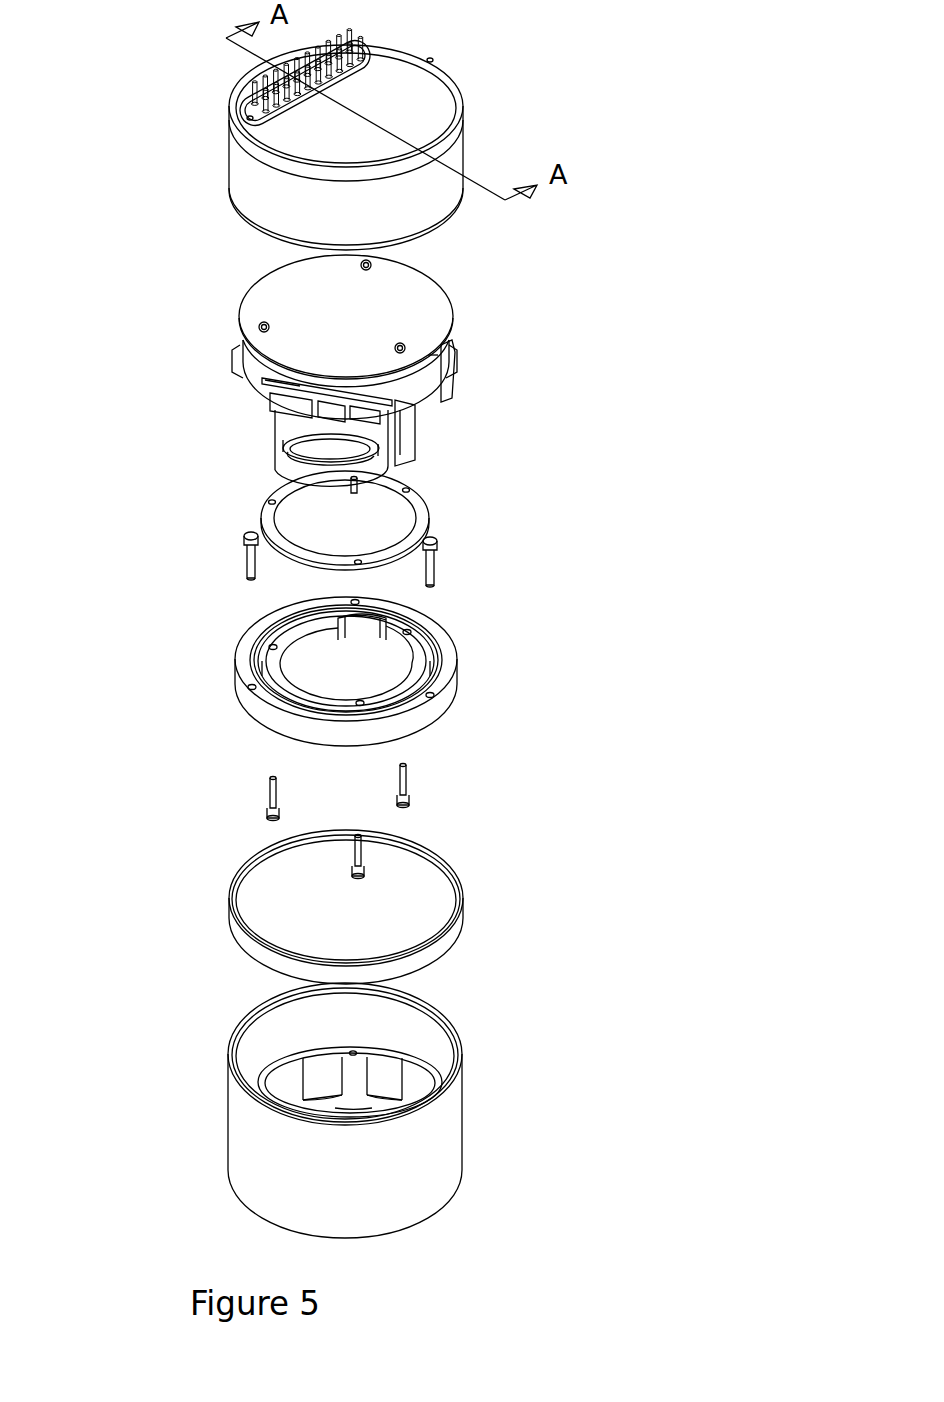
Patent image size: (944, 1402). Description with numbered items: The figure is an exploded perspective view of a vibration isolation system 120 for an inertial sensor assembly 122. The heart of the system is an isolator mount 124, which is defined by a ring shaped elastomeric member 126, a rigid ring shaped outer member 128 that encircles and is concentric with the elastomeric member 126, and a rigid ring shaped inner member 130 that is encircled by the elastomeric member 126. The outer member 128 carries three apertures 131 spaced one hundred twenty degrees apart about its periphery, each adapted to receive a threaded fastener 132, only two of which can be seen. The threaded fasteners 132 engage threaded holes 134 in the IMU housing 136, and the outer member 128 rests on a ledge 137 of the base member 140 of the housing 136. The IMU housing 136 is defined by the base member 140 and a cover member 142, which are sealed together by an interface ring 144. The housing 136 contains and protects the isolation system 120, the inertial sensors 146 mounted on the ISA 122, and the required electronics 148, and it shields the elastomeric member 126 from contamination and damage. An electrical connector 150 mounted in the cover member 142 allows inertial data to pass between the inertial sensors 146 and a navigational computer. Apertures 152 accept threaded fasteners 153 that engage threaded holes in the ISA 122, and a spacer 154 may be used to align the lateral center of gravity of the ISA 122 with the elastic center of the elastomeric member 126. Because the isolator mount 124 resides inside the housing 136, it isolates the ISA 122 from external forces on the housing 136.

The vibration isolation system 120 is at (640, 604).
The inertial sensor assembly 122 is at (450, 367).
The isolator mount 124 is at (329, 641).
The ring shaped elastomeric member 126 is at (438, 653).
The rigid ring shaped outer member 128 is at (235, 650).
The rigid ring shaped inner member 130 is at (413, 643).
The apertures 131 is at (357, 600).
The threaded fastener 132 is at (243, 535).
The threaded holes 134 is at (357, 1052).
The IMU housing 136 is at (364, 1100).
The ledge 137 is at (310, 1050).
The base member 140 is at (400, 1162).
The cover member 142 is at (443, 167).
The interface ring 144 is at (453, 870).
The inertial sensors 146 is at (267, 383).
The electronics 148 is at (445, 290).
The electrical connector 150 is at (287, 98).
The apertures 152 is at (393, 625).
The threaded fasteners 153 is at (272, 777).
The spacer 154 is at (423, 498).